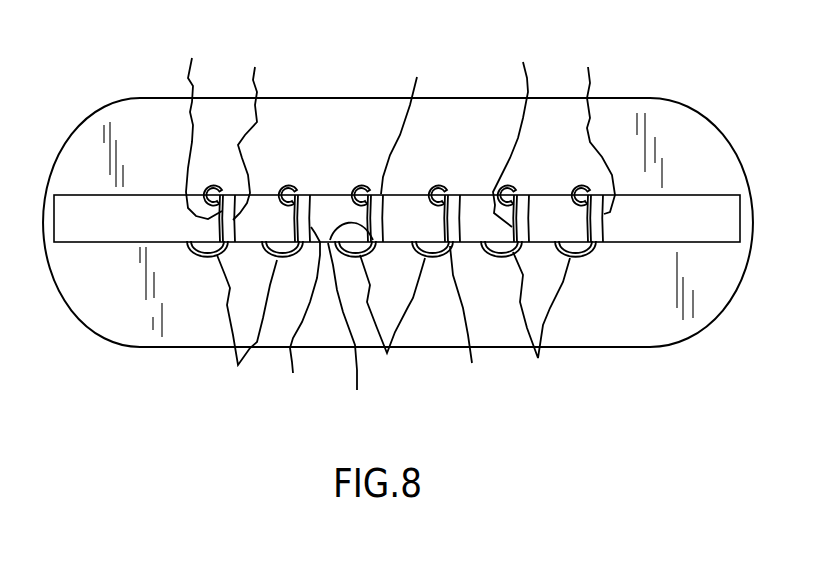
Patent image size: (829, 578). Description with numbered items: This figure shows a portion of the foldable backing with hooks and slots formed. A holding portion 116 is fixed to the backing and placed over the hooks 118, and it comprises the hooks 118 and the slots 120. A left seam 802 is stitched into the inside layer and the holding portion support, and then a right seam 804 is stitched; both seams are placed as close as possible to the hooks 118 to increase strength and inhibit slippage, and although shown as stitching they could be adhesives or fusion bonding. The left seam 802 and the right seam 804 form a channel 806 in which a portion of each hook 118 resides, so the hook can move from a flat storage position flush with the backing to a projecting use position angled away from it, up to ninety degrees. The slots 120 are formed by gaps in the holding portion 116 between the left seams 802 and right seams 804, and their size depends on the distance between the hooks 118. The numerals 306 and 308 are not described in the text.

The holding portion 116 is at (621, 99).
The slots 120 is at (328, 194).
The hooks 118 is at (393, 325).
The webbing loop 306 is at (307, 194).
The webbing loop 308 is at (367, 194).
The left seam 802 is at (361, 233).
The right seam 804 is at (424, 227).
The channel 806 is at (434, 231).